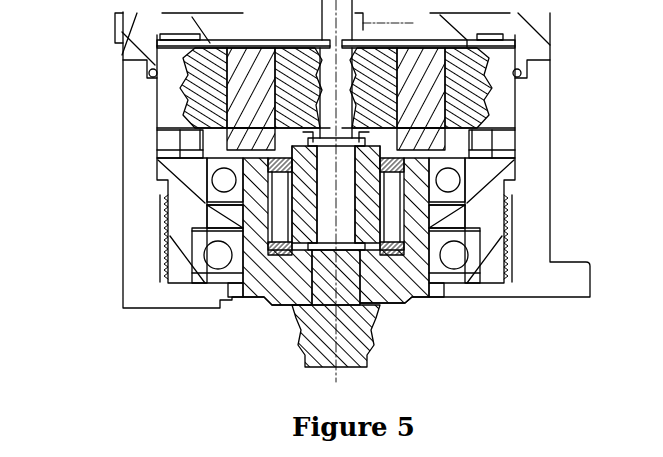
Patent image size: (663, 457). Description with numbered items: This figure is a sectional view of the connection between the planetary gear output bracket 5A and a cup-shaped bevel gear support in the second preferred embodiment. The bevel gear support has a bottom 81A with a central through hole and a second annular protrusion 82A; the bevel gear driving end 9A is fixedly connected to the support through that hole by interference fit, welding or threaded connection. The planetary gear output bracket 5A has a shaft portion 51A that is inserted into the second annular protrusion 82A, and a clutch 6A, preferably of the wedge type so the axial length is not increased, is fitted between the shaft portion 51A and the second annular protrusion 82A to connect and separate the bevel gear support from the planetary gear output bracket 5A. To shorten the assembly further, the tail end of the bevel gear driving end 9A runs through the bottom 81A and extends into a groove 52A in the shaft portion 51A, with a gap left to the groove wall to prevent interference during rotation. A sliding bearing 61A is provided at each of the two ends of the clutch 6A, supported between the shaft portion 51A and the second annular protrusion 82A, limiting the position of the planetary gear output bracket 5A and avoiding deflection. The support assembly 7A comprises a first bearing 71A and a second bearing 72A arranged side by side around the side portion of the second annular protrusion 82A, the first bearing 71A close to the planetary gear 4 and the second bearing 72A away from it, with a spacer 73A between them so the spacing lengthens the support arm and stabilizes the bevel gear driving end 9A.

The planetary gear 4 is at (190, 88).
The planetary gear output bracket 5A is at (500, 138).
The shaft portion 51A is at (513, 180).
The groove 52A is at (505, 248).
The clutch 6A is at (225, 152).
The sliding bearing 61A is at (250, 138).
The support assembly 7A is at (251, 216).
The first bearing 71A is at (207, 176).
The second bearing 72A is at (205, 254).
The spacer 73A is at (207, 214).
The bottom 81A is at (402, 282).
The second annular protrusion 82A is at (468, 219).
The bevel gear driving end 9A is at (345, 292).